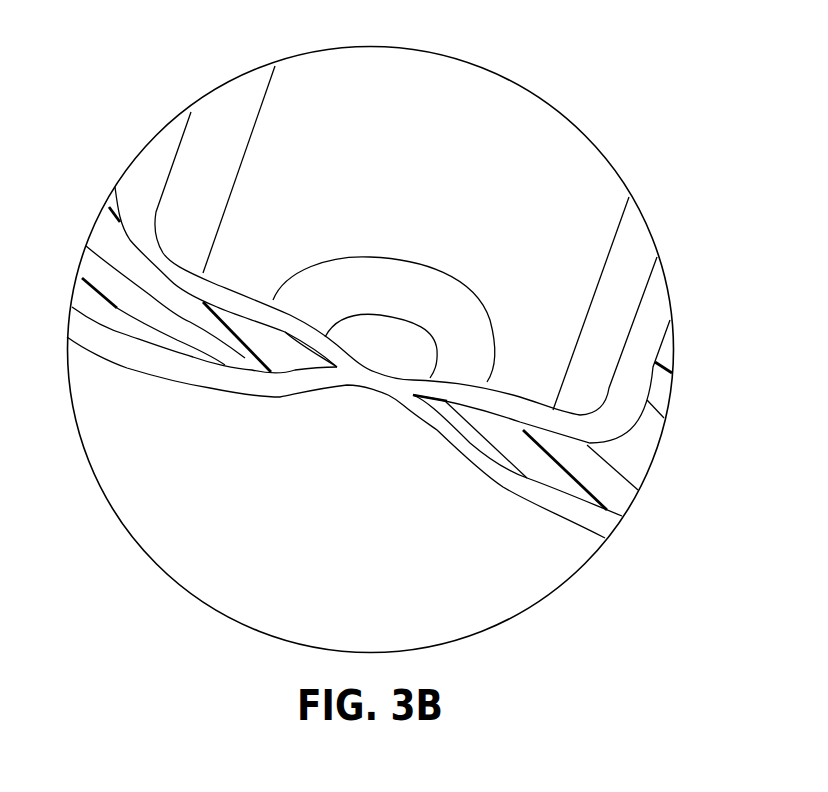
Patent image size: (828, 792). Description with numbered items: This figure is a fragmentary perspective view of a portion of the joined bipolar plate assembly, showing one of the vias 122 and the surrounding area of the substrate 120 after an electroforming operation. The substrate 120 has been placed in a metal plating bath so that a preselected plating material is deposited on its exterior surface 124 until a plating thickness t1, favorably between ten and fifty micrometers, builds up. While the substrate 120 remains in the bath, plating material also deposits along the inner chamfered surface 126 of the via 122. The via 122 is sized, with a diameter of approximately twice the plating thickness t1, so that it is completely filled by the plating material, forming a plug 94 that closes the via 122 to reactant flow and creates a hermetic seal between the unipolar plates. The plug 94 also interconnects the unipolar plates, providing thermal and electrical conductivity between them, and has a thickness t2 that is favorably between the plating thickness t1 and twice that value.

The substrate 120 is at (113, 106).
The via 122 is at (337, 370).
The exterior surface 124 is at (188, 293).
The inner chamfered surface 126 is at (440, 403).
The plug 94 is at (358, 366).
The plating thickness t1 is at (490, 470).
The plug thickness t2 is at (398, 325).